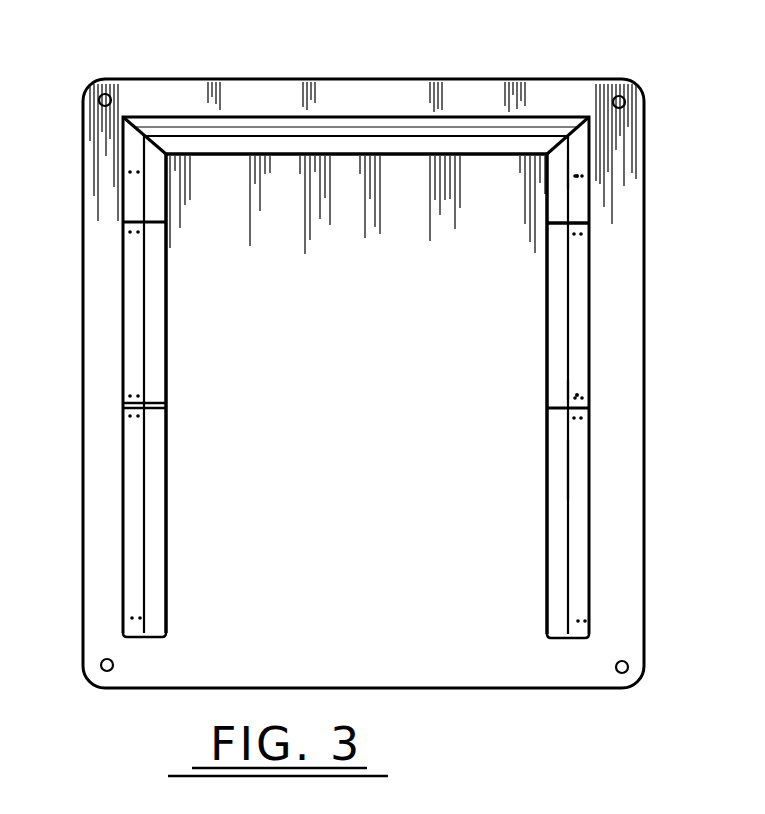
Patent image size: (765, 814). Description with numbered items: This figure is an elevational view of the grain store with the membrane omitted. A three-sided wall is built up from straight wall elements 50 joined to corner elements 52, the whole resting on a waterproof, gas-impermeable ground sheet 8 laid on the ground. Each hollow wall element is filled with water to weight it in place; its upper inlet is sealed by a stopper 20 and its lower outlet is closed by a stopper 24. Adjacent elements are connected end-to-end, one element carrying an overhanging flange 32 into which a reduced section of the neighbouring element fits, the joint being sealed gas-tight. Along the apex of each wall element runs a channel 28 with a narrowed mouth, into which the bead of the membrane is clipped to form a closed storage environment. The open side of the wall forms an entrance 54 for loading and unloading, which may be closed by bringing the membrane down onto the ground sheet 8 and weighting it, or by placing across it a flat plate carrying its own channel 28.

The ground sheet 8 is at (366, 606).
The stopper 20 is at (577, 175).
The stopper 24 is at (580, 175).
The channel 28 is at (568, 470).
The overhanging flange 32 is at (590, 223).
The straight wall element 50 is at (360, 123).
The corner element 52 is at (137, 162).
The entrance 54 is at (337, 653).